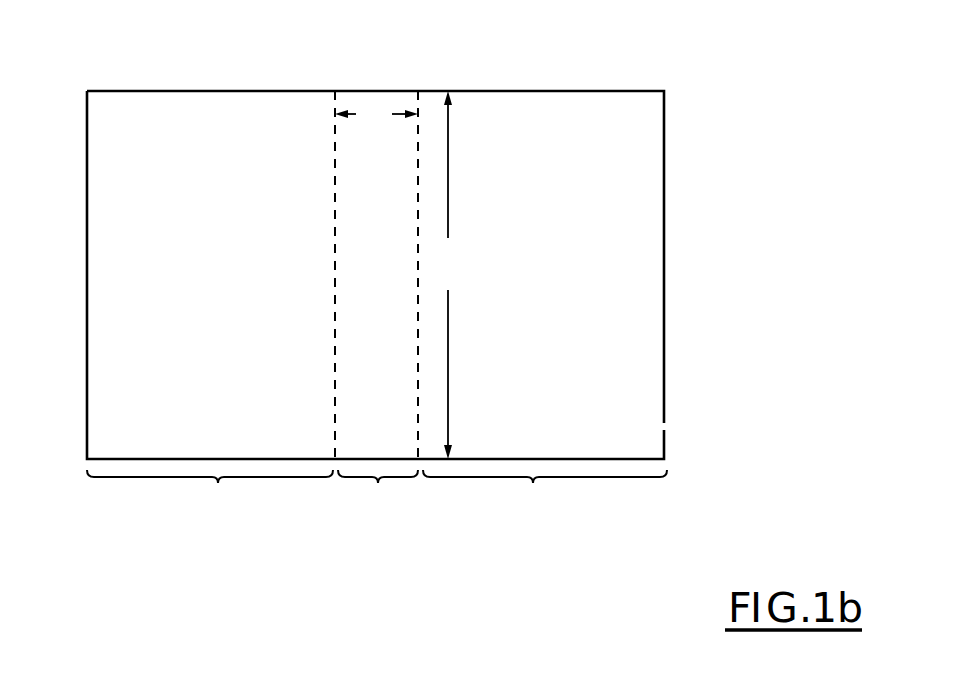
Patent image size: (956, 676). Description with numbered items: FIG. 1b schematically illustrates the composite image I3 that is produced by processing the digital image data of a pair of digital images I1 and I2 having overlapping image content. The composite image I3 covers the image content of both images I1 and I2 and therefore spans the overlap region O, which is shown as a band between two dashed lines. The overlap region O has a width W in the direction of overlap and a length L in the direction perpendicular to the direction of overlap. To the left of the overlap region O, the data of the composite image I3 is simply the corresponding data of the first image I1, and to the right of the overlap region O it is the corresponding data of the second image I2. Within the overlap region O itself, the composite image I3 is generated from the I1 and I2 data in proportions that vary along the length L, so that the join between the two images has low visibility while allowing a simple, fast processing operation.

The composite image I3 is at (371, 240).
The overlap region O is at (352, 213).
The width of the overlap region W is at (376, 115).
The length of the overlap region L is at (448, 275).
The digital image I1 is at (210, 497).
The digital image I2 is at (545, 497).